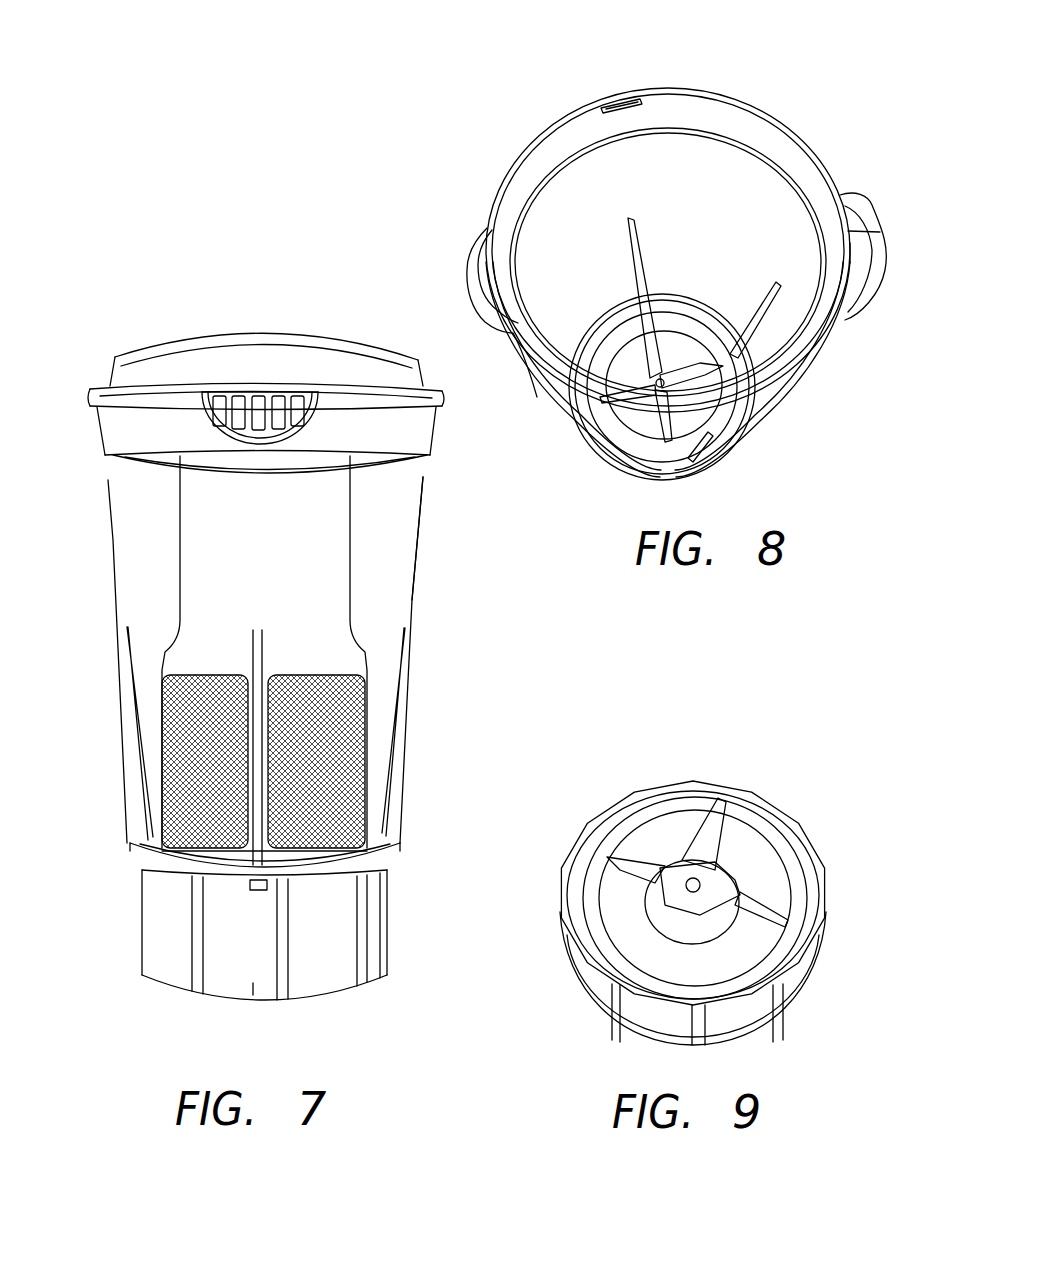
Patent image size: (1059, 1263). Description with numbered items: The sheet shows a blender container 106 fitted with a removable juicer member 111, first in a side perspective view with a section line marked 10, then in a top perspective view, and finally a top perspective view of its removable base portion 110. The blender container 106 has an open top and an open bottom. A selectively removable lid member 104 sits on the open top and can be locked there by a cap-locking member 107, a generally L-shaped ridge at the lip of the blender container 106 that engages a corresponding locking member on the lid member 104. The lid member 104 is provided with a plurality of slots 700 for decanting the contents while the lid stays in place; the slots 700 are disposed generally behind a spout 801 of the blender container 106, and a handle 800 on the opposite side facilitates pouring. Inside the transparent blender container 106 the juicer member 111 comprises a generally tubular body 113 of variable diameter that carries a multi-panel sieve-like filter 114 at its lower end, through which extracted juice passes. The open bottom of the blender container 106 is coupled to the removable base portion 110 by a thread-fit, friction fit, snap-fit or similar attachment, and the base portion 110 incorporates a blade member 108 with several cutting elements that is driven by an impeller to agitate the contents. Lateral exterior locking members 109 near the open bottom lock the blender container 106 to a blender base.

In FIG. 7, the section line 10- 10 is at (255, 327).
In FIG. 7, the lid member 104 is at (387, 363).
In FIG. 7, the blender container 106 is at (138, 562).
In FIG. 8, the blender container 106 is at (743, 130).
In FIG. 8, the cap-locking member 107 is at (610, 100).
In FIG. 8, the blade member 108 is at (657, 353).
In FIG. 9, the blade member 108 is at (705, 852).
In FIG. 7, the locking members 109 is at (257, 893).
In FIG. 7, the removable base portion 110 is at (368, 933).
In FIG. 9, the removable base portion 110 is at (770, 827).
In FIG. 7, the juicer member 111 is at (365, 510).
In FIG. 7, the tubular body 113 is at (333, 580).
In FIG. 7, the multi-panel sieve-like filter 114 is at (213, 765).
In FIG. 7, the slots 700 is at (281, 408).
In FIG. 8, the handle 800 is at (856, 210).
In FIG. 7, the spout 801 is at (313, 403).
In FIG. 8, the spout 801 is at (483, 278).